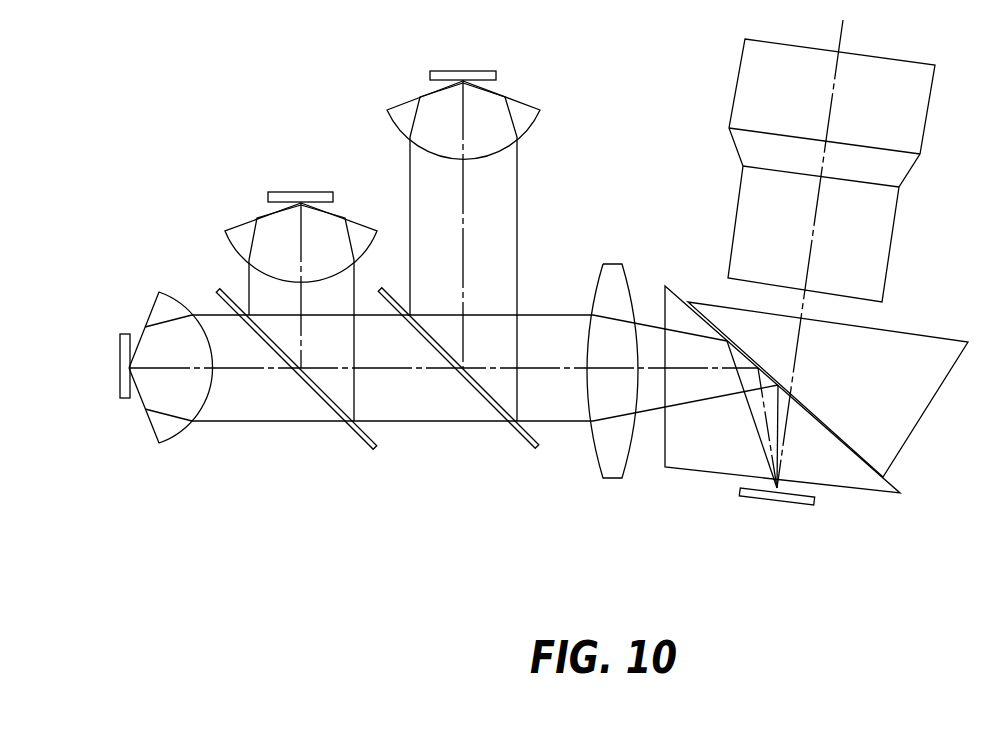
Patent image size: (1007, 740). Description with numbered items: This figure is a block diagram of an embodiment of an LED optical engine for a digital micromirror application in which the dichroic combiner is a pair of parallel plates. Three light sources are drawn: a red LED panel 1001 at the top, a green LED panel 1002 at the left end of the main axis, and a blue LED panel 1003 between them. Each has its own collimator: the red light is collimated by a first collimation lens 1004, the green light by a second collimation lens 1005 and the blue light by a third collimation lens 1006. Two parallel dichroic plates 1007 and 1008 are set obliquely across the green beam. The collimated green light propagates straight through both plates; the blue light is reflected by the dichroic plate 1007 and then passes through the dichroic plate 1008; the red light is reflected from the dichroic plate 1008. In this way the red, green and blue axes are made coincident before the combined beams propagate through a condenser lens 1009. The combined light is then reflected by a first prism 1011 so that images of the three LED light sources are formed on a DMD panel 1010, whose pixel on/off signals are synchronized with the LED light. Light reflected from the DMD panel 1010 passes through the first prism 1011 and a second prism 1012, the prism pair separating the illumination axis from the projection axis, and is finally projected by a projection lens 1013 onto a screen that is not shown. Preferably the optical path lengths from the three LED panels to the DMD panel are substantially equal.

The red LED panel 1001 is at (437, 70).
The green LED panel 1002 is at (123, 334).
The blue LED panel 1003 is at (278, 191).
The first collimation lens 1004 is at (410, 105).
The second collimation lens 1005 is at (162, 310).
The third collimation lens 1006 is at (250, 228).
The dichroic plate 1007 is at (362, 440).
The dichroic plate 1008 is at (524, 440).
The condenser lens 1009 is at (612, 264).
The DMD panel 1010 is at (792, 503).
The first prism 1011 is at (677, 455).
The second prism 1012 is at (922, 340).
The projection lens 1013 is at (733, 102).